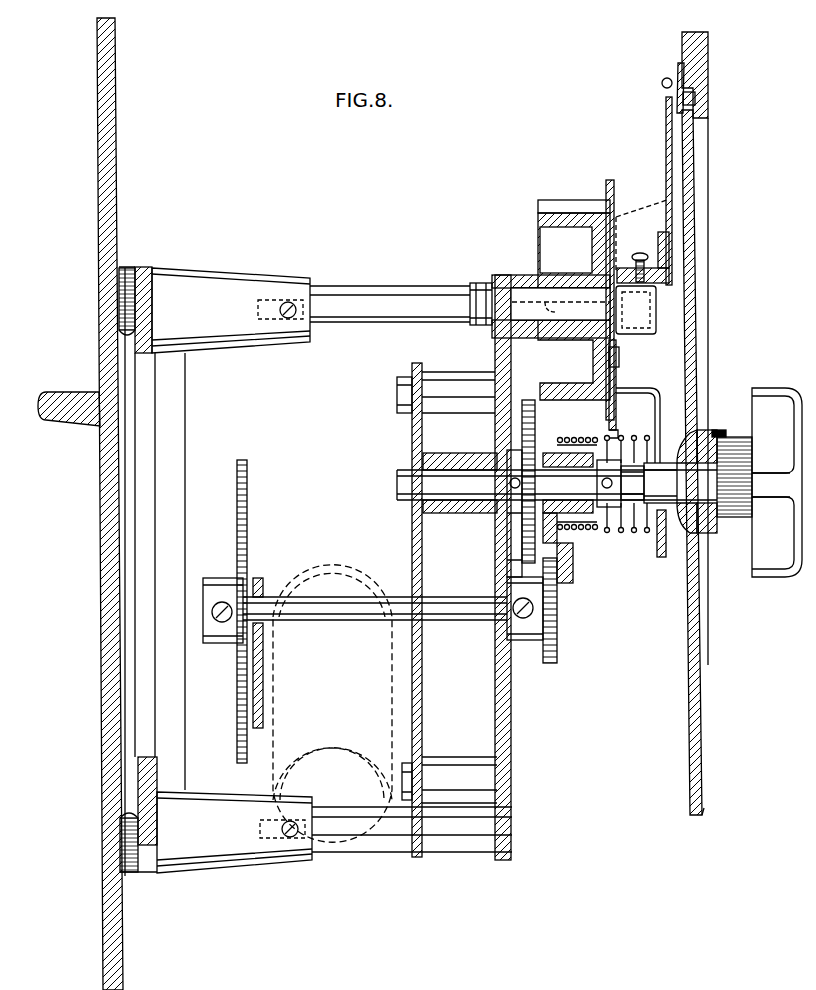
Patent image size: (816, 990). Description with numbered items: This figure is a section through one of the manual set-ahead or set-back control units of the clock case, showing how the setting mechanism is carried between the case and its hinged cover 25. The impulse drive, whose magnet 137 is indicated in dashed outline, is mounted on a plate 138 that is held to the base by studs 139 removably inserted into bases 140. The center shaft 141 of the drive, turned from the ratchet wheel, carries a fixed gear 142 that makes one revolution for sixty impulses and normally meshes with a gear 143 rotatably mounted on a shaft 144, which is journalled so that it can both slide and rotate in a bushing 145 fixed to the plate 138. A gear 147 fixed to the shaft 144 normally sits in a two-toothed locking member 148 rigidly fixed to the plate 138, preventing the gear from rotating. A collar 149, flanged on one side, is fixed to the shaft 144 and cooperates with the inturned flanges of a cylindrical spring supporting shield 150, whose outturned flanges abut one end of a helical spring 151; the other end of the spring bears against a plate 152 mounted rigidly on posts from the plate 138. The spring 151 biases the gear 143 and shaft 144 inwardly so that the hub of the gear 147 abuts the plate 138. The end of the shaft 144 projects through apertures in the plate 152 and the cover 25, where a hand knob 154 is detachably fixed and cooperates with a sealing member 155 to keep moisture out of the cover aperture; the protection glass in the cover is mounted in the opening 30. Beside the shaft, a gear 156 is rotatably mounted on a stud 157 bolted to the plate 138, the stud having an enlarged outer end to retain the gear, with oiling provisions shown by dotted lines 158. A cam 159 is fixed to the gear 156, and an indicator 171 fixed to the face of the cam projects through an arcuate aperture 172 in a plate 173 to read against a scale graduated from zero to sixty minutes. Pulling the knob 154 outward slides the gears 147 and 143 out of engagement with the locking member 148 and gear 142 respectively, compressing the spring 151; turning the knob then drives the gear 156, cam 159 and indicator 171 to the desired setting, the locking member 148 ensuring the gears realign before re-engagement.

The cover 25 is at (709, 51).
The opening 30 is at (703, 315).
The magnet 137 is at (327, 560).
The plate 138 is at (496, 713).
The studs 139 is at (378, 291).
The bases 140 is at (214, 292).
The center shaft 141 is at (440, 612).
The gear 142 is at (558, 658).
The gear 143 is at (573, 547).
The shaft 144 is at (648, 523).
The bushing 145 is at (443, 462).
The gear 147 is at (528, 403).
The locking member 148 is at (510, 555).
The collar 149 is at (627, 500).
The spring supporting shield 150 is at (557, 444).
The helical spring 151 is at (636, 437).
The plate 152 is at (668, 548).
The hand knob 154 is at (772, 388).
The sealing member 155 is at (719, 430).
The gear 156 is at (530, 205).
The stud 157 is at (519, 295).
The oiling provisions 158 is at (578, 300).
The cam 159 is at (609, 178).
The indicator 171 is at (640, 206).
The arcuate aperture 172 is at (667, 226).
The plate 173 is at (667, 97).